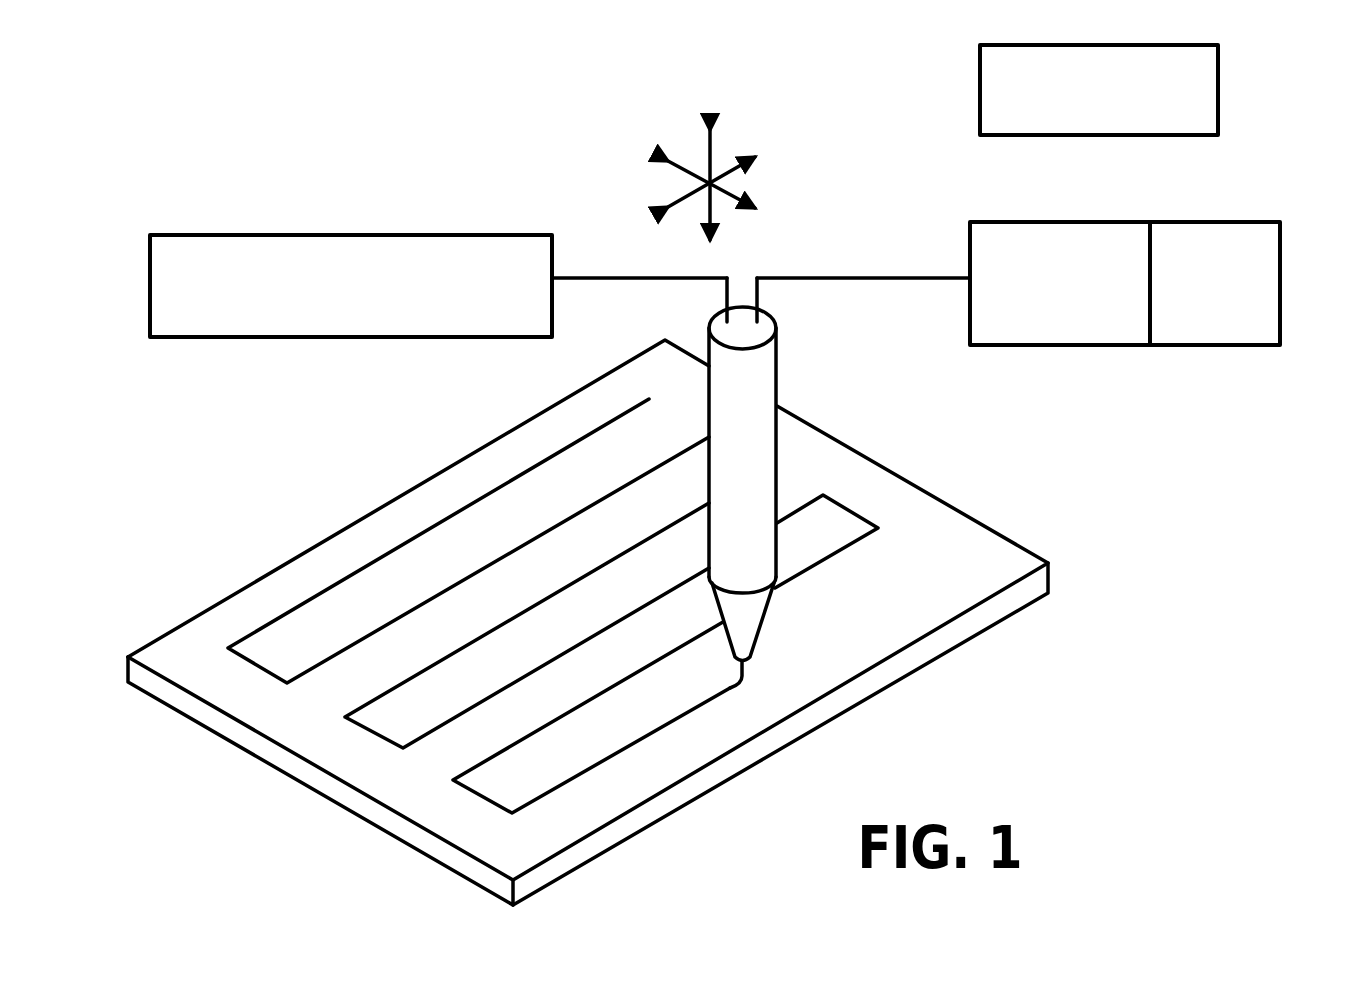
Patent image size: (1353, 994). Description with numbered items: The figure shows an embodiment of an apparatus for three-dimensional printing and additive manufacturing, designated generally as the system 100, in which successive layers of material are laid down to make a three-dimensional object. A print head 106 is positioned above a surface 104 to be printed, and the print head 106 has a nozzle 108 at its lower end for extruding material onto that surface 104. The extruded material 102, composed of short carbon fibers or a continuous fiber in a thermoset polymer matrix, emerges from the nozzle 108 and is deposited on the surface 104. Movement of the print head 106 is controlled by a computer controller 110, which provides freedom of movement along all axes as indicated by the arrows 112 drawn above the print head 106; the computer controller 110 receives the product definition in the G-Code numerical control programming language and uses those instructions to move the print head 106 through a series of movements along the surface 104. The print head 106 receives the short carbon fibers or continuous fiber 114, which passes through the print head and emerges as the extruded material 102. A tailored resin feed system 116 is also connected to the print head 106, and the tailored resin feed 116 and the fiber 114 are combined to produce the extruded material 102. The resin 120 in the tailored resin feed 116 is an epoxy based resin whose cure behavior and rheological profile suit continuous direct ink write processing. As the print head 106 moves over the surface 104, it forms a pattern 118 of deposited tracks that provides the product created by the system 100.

The system 100 is at (520, 115).
The extruded material 102 is at (747, 662).
The surface 104 is at (977, 584).
The print head 106 is at (757, 395).
The nozzle 108 is at (765, 630).
The computer controller 110 is at (979, 90).
The arrows 112 is at (713, 153).
The short carbon fibers or continuous fiber 114 is at (423, 235).
The tailored resin feed system 116 is at (1064, 346).
The pattern 118 is at (387, 552).
The resin 120 is at (1222, 346).